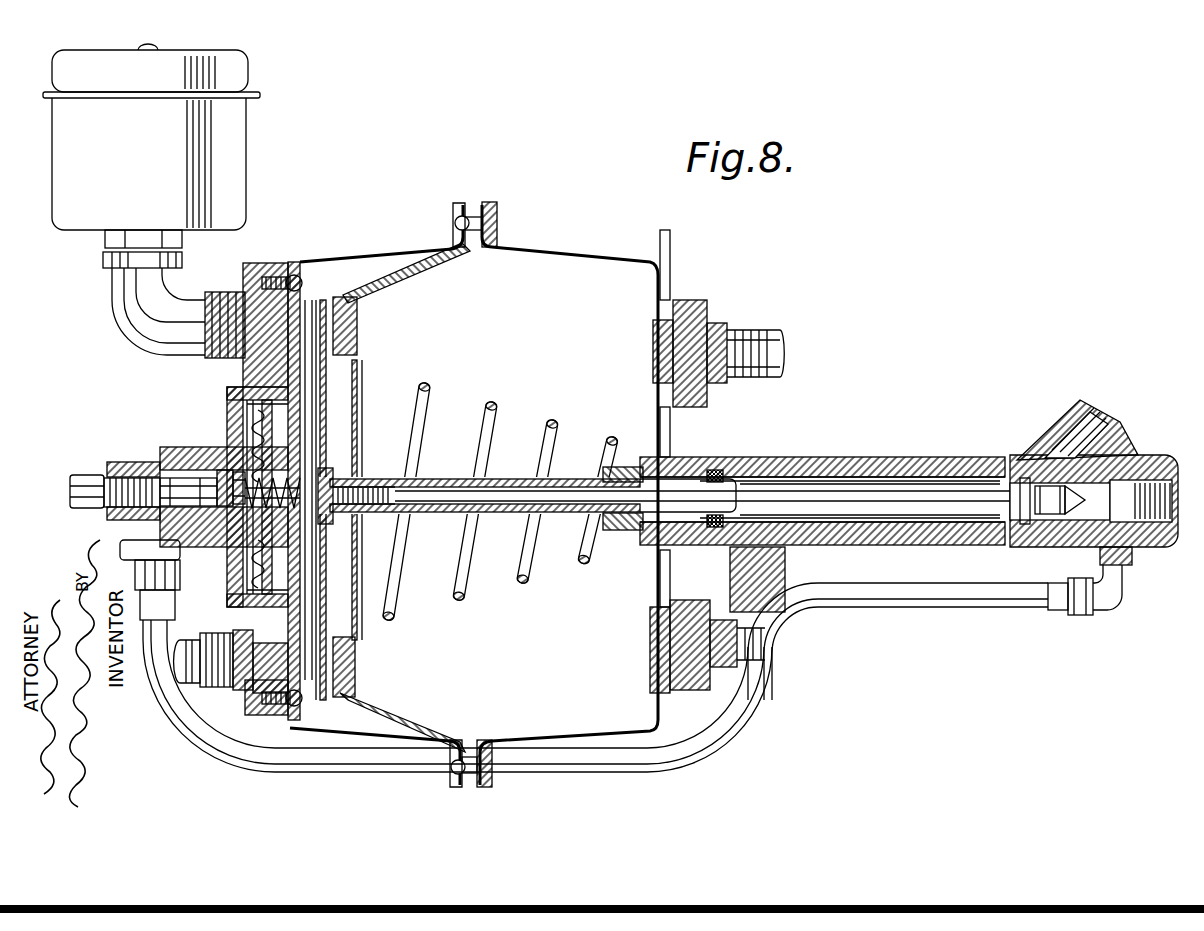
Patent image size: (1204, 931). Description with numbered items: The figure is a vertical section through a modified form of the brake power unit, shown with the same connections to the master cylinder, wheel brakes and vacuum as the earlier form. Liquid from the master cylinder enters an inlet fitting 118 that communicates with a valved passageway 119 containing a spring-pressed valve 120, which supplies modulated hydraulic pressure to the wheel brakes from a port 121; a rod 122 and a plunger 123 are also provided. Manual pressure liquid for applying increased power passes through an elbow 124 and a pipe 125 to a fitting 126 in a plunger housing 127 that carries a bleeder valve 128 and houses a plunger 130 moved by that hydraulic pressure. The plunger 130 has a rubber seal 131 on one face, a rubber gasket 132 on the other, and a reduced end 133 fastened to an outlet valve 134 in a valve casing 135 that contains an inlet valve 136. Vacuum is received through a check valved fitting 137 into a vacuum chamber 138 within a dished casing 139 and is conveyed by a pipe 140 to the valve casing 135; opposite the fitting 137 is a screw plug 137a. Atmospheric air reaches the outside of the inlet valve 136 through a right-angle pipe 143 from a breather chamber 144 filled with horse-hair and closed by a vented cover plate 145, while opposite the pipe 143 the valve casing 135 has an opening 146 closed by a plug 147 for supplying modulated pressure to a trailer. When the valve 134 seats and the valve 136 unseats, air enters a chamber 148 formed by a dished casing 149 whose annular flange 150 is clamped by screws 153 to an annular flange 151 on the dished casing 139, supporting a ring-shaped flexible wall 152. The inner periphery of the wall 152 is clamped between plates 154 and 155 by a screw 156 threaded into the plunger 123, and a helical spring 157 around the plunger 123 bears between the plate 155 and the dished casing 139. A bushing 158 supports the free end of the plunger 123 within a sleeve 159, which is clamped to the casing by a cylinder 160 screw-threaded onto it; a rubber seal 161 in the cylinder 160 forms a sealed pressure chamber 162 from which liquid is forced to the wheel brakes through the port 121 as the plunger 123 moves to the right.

The inlet fitting 118 is at (1178, 452).
The valved passageway 119 is at (1118, 495).
The spring-pressed valve 120 is at (1063, 515).
The port 121 is at (1067, 413).
The rod 122 is at (880, 500).
The plunger 123 is at (755, 460).
The elbow 124 is at (1108, 592).
The pipe 125 is at (837, 594).
The fitting 126 is at (165, 577).
The plunger housing 127 is at (170, 458).
The bleeder valve 128 is at (92, 473).
The plunger 130 is at (196, 488).
The rubber seal 131 is at (178, 440).
The rubber gasket 132 is at (217, 547).
The reduced end 133 is at (212, 504).
The outlet valve 134 is at (240, 403).
The valve casing 135 is at (227, 607).
The inlet valve 136 is at (300, 396).
The check valved fitting 137 is at (722, 320).
The screw plug 137a is at (668, 634).
The vacuum chamber 138 is at (507, 492).
The dished casing 139 is at (538, 250).
The pipe 140 is at (747, 700).
The right-angle pipe 143 is at (137, 318).
The breather chamber 144 is at (230, 167).
The vented cover plate 145 is at (237, 74).
The opening 146 is at (237, 707).
The plug 147 is at (197, 683).
The chamber 148 is at (330, 275).
The dished casing 149 is at (397, 253).
The annular flange 150 is at (462, 203).
The annular flange 151 is at (483, 212).
The flexible wall 152 is at (422, 275).
The screws 153 is at (498, 226).
The plate 154 is at (317, 690).
The plate 155 is at (355, 668).
The screw 156 is at (377, 470).
The helical spring 157 is at (462, 608).
The bushing 158 is at (628, 538).
The sleeve 159 is at (628, 450).
The cylinder 160 is at (863, 535).
The rubber seal 161 is at (708, 533).
The pressure chamber 162 is at (958, 515).